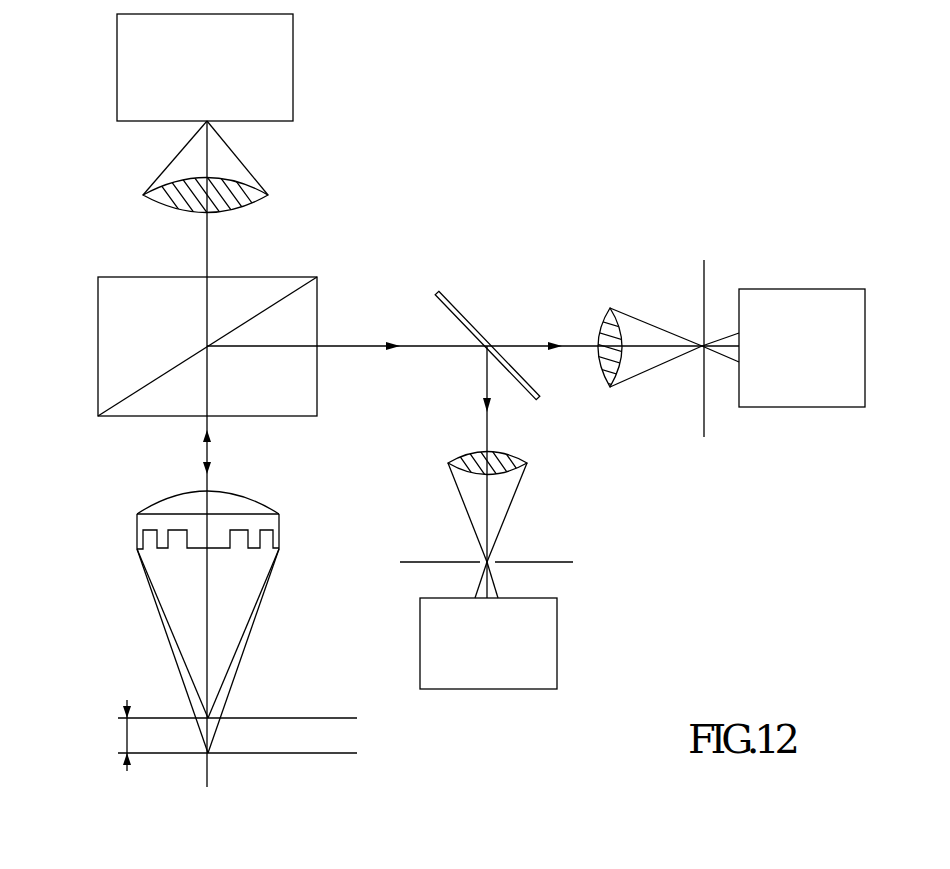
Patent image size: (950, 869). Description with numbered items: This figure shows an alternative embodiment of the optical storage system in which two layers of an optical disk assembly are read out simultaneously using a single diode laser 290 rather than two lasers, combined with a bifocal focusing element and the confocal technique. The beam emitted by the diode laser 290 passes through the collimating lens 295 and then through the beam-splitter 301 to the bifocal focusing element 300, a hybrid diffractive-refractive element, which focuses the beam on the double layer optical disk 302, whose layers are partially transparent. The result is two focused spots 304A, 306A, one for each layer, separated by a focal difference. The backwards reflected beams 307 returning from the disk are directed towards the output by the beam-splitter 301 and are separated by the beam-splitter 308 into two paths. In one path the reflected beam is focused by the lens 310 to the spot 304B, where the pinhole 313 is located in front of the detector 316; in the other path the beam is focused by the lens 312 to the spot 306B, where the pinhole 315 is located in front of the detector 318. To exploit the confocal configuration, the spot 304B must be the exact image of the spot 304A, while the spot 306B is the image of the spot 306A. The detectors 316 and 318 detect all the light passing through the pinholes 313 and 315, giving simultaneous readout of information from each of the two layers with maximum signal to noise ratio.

The single diode laser 290 is at (293, 80).
The collimating lens 295 is at (256, 197).
The beam-splitter 301 is at (97, 317).
The backwards reflected beams 307 is at (357, 346).
The beam-splitter 308 is at (478, 332).
The lens 310 is at (468, 453).
The spot 304B is at (484, 558).
The pinhole 313 is at (543, 557).
The detector 316 is at (557, 632).
The lens 312 is at (608, 308).
The spot 306B is at (697, 357).
The pinhole 315 is at (707, 287).
The detector 318 is at (773, 407).
The bifocal focusing element 300 is at (170, 504).
The focused spot 304A is at (212, 713).
The focused spot 306A is at (213, 747).
The double layer optical disk 302 is at (177, 738).